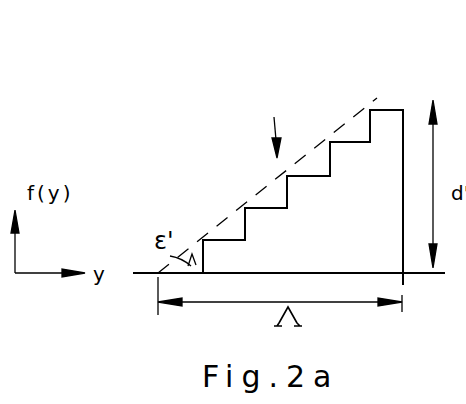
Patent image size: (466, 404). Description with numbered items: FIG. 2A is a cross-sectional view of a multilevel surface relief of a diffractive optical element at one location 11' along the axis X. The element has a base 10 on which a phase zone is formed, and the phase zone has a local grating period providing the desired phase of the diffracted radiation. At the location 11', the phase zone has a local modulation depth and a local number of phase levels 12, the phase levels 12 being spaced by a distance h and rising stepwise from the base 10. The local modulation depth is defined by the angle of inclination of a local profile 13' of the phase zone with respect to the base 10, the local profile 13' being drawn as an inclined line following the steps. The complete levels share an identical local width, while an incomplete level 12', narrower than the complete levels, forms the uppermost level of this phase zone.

The base 10 is at (256, 277).
The phase levels 12 is at (303, 197).
The incomplete level 12' is at (403, 77).
The local profile 13' is at (267, 179).
The location 11' is at (277, 123).